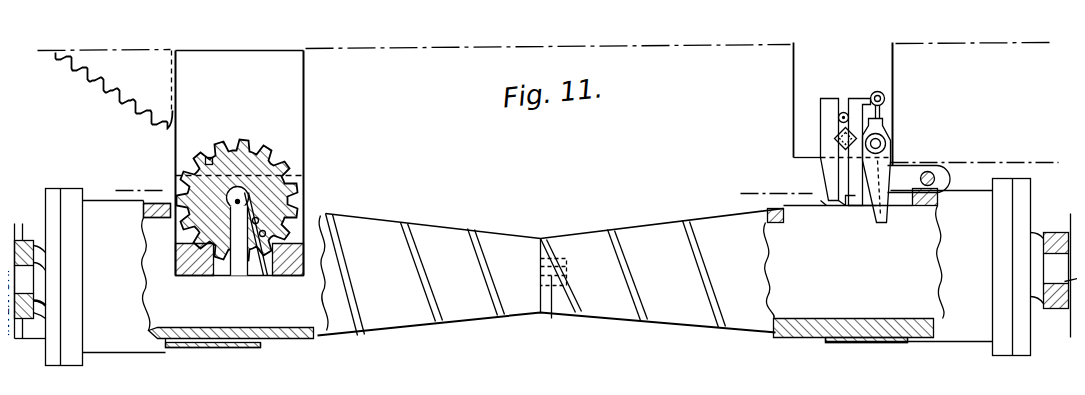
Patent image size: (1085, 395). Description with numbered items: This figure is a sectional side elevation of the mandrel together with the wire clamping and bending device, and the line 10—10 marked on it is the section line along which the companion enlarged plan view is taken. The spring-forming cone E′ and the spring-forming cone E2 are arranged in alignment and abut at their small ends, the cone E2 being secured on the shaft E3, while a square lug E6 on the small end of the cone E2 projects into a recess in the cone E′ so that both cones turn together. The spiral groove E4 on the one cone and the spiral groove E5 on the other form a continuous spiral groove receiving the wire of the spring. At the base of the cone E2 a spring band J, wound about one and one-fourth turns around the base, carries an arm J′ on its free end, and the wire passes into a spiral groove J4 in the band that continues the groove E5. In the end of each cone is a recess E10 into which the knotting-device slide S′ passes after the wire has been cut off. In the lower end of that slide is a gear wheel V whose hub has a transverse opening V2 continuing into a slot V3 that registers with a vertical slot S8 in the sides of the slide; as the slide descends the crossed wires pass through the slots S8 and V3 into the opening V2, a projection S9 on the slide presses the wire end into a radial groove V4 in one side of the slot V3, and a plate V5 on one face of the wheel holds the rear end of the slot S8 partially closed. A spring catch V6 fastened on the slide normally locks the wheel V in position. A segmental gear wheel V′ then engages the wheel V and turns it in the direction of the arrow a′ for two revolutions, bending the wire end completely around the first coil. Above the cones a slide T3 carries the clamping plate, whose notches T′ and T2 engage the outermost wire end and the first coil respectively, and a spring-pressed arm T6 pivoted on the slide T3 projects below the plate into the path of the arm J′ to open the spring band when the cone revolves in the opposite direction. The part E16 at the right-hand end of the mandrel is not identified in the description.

The section line 10— 10 is at (586, 179).
The shaft E3 is at (22, 240).
The housing S′ is at (312, 96).
The segmental gear wheel V′ is at (168, 100).
The arrow a′ is at (277, 120).
The gear wheel V is at (251, 201).
The spring catch V6 is at (206, 160).
The transverse opening V2 is at (230, 195).
The slot V3 is at (215, 241).
The radial groove V4 is at (304, 203).
The plate V5 is at (239, 233).
The vertical slot S8 is at (222, 276).
The projection S9 is at (255, 275).
The spring band J is at (196, 340).
The spiral groove J4 is at (236, 340).
The spring-forming cone E2 is at (448, 232).
The spiral groove E5 is at (355, 336).
The square lug E6 is at (560, 290).
The spiral groove E4 is at (684, 283).
The spring-forming cone E′ is at (708, 223).
The recess E10 is at (878, 266).
The arm J′ is at (890, 341).
The slide T3 is at (886, 82).
The notch T′ is at (834, 138).
The notch T2 is at (843, 172).
The spring-pressed arm T6 is at (890, 160).
The right flange wheel E16 is at (1055, 226).